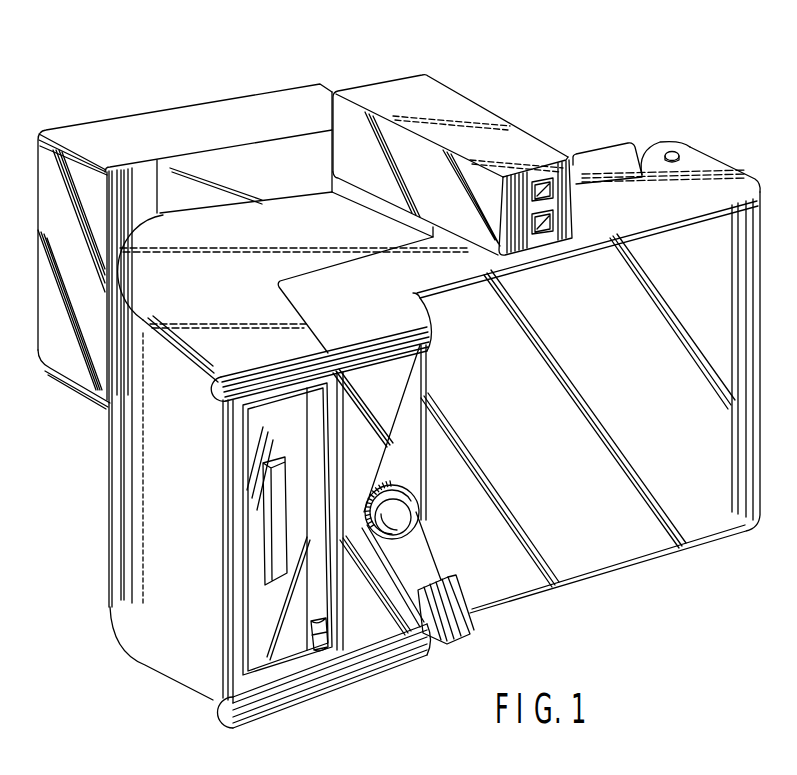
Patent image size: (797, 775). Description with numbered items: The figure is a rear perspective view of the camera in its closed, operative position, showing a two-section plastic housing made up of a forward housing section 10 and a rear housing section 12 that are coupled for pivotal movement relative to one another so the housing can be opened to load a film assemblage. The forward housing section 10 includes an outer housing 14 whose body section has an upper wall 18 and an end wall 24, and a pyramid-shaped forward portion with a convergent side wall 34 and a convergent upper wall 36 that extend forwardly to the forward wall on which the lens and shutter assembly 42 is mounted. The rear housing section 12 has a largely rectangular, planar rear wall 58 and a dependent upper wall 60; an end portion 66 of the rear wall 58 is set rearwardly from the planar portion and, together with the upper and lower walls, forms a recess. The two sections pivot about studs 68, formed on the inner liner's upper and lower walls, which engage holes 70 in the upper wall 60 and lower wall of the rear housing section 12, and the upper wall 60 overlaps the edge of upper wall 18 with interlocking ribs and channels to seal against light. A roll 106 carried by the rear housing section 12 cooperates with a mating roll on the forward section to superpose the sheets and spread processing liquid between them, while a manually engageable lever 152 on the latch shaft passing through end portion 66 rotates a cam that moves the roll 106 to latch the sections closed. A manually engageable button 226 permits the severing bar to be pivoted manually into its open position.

The forward housing section 10 is at (100, 481).
The rear housing section 12 is at (650, 582).
The outer housing 14 is at (600, 130).
The upper wall 18 is at (333, 231).
The end wall 24 is at (184, 543).
The side wall 34 is at (182, 197).
The upper wall 36 is at (294, 169).
The lens and shutter assembly 42 is at (259, 82).
The rear wall 58 is at (542, 442).
The upper wall 60 is at (652, 211).
The end portion 66 is at (357, 597).
The studs 68 is at (672, 150).
The holes 70 is at (682, 156).
The roll 106 is at (318, 652).
The manually engageable lever 152 is at (414, 554).
The manually engageable button 226 is at (273, 525).